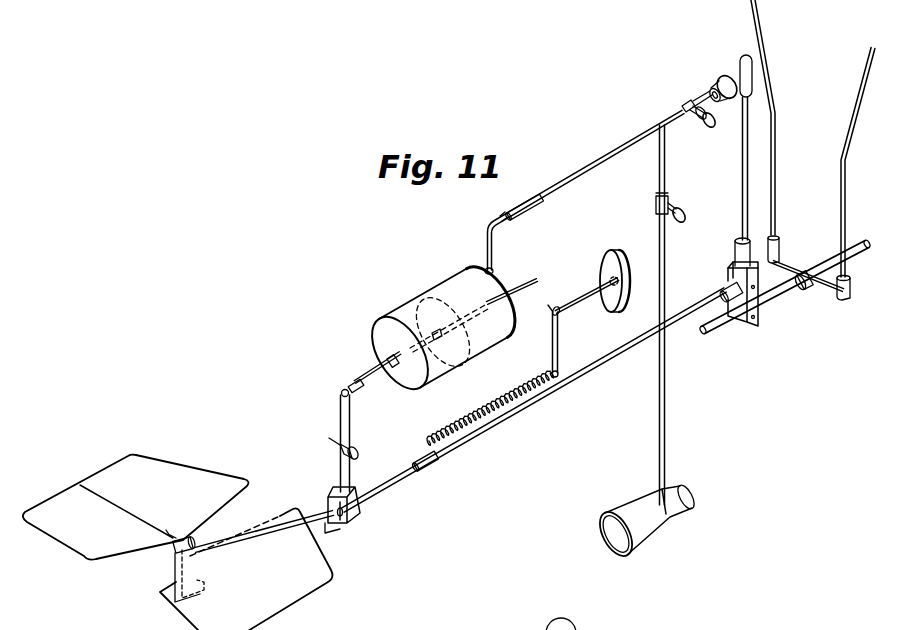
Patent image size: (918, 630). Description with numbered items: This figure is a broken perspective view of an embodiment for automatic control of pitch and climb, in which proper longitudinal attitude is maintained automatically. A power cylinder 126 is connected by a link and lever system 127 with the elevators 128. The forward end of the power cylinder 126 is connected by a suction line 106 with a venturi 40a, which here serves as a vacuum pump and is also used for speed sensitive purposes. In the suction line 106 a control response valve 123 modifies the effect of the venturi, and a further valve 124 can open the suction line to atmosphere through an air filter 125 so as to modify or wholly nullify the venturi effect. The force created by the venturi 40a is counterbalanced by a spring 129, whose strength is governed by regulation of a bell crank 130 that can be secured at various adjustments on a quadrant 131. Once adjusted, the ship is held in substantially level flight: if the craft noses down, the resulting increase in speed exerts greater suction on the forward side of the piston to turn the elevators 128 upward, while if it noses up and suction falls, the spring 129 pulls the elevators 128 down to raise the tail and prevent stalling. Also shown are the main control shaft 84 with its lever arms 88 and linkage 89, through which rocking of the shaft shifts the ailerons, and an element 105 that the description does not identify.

The venturi 40a is at (651, 530).
The main control shaft 84 is at (720, 331).
The lever arms 88 is at (822, 292).
The linkage 89 is at (841, 173).
The member 105 is at (584, 624).
The suction line 106 is at (606, 158).
The control response valve 123 is at (676, 203).
The valve 124 is at (690, 102).
The air filter 125 is at (720, 79).
The power cylinder 126 is at (412, 313).
The link and lever system 127 is at (340, 418).
The elevators 128 is at (167, 593).
The spring 129 is at (492, 404).
The bell crank 130 is at (584, 291).
The quadrant 131 is at (637, 287).